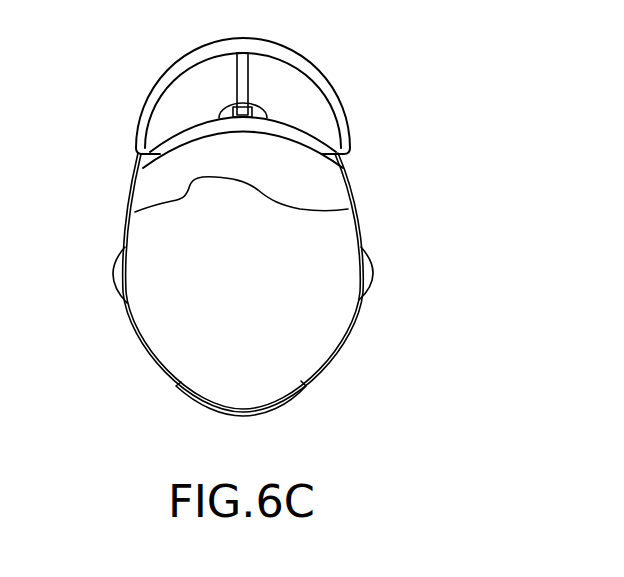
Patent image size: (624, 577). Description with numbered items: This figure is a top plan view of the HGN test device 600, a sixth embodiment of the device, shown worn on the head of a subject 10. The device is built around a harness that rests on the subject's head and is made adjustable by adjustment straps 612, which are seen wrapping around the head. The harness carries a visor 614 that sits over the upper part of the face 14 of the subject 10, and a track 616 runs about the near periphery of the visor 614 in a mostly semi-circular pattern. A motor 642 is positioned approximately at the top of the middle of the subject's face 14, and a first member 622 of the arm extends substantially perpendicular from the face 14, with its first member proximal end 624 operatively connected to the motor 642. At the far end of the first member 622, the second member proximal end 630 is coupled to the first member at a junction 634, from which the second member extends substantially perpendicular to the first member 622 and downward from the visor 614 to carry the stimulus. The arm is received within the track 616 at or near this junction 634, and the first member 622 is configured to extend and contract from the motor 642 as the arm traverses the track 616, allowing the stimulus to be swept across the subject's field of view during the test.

The subject 10 is at (97, 366).
The face 14 is at (160, 163).
The HGN test device 600 is at (425, 217).
The adjustment straps 612 is at (258, 410).
The visor 614 is at (340, 110).
The track 616 is at (318, 88).
The first member 622 is at (248, 82).
The first member proximal end 624 is at (233, 110).
The second member proximal end 630 is at (236, 50).
The junction 634 is at (240, 54).
The motor 642 is at (218, 113).